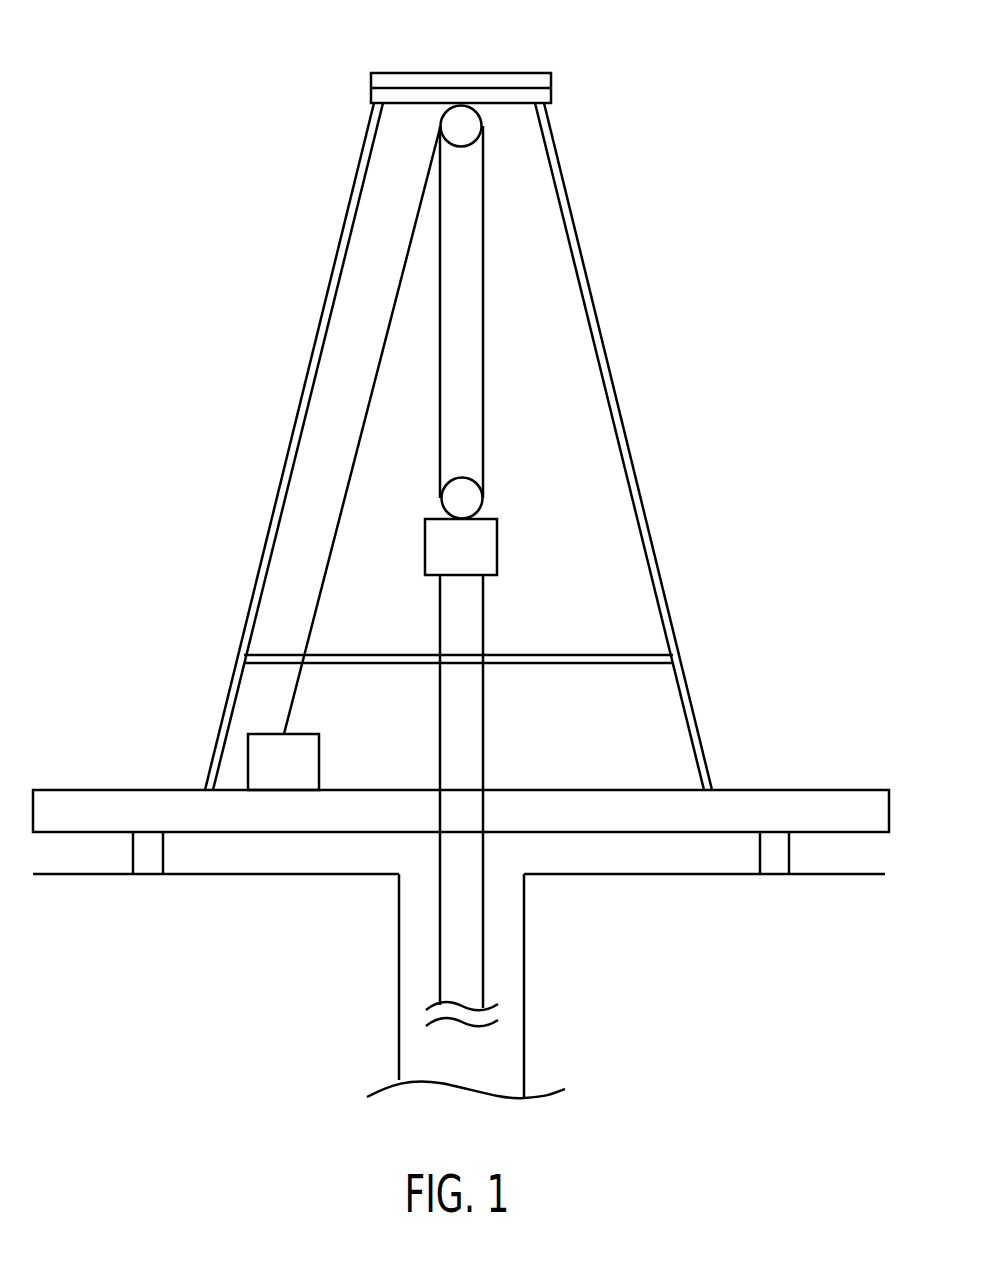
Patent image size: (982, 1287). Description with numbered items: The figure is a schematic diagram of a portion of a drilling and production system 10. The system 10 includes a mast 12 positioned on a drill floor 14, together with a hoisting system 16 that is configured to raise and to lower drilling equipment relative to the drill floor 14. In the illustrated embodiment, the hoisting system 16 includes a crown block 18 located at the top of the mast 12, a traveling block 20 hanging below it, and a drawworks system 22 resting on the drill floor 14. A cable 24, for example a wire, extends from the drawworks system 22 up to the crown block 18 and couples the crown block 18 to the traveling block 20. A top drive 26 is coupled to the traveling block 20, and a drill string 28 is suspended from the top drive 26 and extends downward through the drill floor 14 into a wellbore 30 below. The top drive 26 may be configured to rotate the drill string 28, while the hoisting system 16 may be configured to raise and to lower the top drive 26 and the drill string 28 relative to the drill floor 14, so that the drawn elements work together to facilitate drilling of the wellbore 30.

The drilling and production system 10 is at (658, 122).
The mast 12 is at (655, 542).
The drill floor 14 is at (798, 790).
The hoisting system 16 is at (357, 548).
The crown block 18 is at (462, 125).
The traveling block 20 is at (461, 497).
The drawworks system 22 is at (319, 763).
The cable 24 is at (368, 412).
The top drive 26 is at (467, 541).
The drill string 28 is at (483, 975).
The wellbore 30 is at (523, 915).